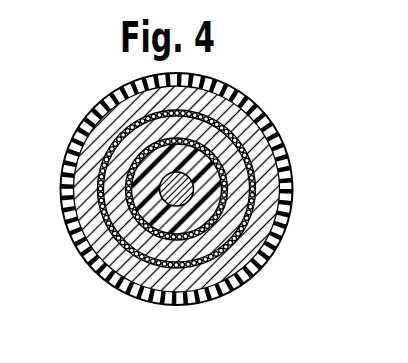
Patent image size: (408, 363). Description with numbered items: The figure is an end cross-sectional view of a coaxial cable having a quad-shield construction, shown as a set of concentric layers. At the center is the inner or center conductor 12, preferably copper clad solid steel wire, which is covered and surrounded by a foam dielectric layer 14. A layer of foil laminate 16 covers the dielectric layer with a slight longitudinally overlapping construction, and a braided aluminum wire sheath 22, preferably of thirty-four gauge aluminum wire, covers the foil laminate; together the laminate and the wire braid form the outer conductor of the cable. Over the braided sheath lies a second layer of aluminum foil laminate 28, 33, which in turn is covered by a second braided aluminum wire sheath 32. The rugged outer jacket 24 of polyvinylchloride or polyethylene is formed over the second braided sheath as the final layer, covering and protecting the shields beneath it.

The center conductor 12 is at (158, 177).
The foam dielectric layer 14 is at (145, 209).
The foil laminate 16 is at (93, 233).
The braided aluminum wire sheath 22 is at (143, 264).
The outer jacket 24 is at (268, 252).
The second layer of aluminum foil laminate 28 is at (197, 272).
The second braided aluminum wire sheath 32 is at (246, 282).
The second layer of aluminum foil laminate 33 is at (177, 232).